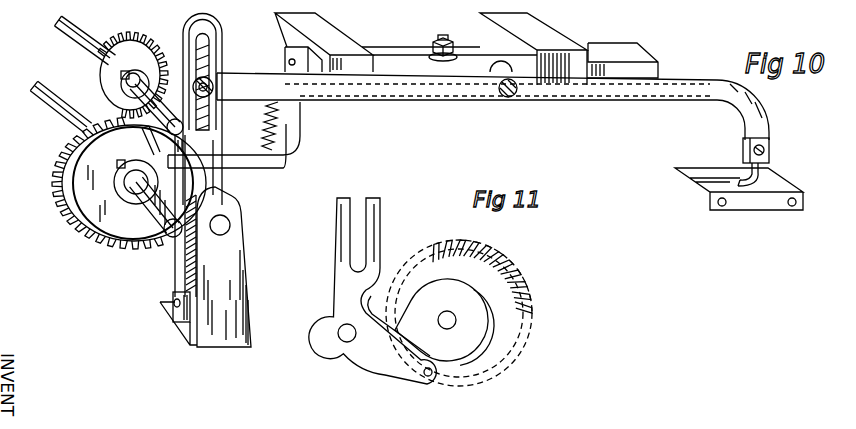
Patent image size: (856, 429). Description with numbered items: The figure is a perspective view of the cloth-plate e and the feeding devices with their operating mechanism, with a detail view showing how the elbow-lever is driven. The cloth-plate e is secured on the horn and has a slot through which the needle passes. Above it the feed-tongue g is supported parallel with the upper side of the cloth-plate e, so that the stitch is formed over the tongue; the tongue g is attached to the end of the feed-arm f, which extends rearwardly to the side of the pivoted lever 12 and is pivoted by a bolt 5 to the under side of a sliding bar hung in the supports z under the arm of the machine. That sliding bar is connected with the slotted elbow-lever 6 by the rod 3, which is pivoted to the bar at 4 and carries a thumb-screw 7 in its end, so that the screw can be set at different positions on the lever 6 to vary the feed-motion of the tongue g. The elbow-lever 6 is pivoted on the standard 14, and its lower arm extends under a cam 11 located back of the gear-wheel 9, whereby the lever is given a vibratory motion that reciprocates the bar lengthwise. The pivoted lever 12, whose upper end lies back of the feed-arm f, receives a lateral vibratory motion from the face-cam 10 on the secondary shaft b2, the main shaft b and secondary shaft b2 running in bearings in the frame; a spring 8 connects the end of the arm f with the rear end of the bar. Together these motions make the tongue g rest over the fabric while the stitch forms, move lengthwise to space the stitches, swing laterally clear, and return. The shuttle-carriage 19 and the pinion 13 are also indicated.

In FIG. 10, the main shaft b is at (84, 26).
In FIG. 10, the secondary shaft b2 is at (50, 106).
In FIG. 10, the pinion gear 13 is at (93, 70).
In FIG. 10, the gear-wheel 9 is at (76, 214).
In FIG. 11, the gear-wheel 9 is at (537, 322).
In FIG. 10, the face-cam 10 is at (148, 181).
In FIG. 10, the slotted elbow-lever 6 is at (223, 35).
In FIG. 11, the slotted elbow-lever 6 is at (381, 226).
In FIG. 10, the rod 3 is at (259, 73).
In FIG. 10, the thumb-screw 7 is at (226, 96).
In FIG. 10, the spring 8 is at (265, 132).
In FIG. 10, the feed-arm f is at (395, 144).
In FIG. 10, the pivoted lever 12 is at (175, 258).
In FIG. 10, the standard 14 is at (205, 267).
In FIG. 10, the supports z is at (466, 49).
In FIG. 10, the shuttle-carriage 19 is at (436, 20).
In FIG. 10, the bolt 5 is at (445, 40).
In FIG. 10, the pivot 4 is at (507, 97).
In FIG. 10, the feed-tongue g is at (770, 166).
In FIG. 10, the cloth-plate e is at (800, 180).
In FIG. 11, the cam 11 is at (444, 322).